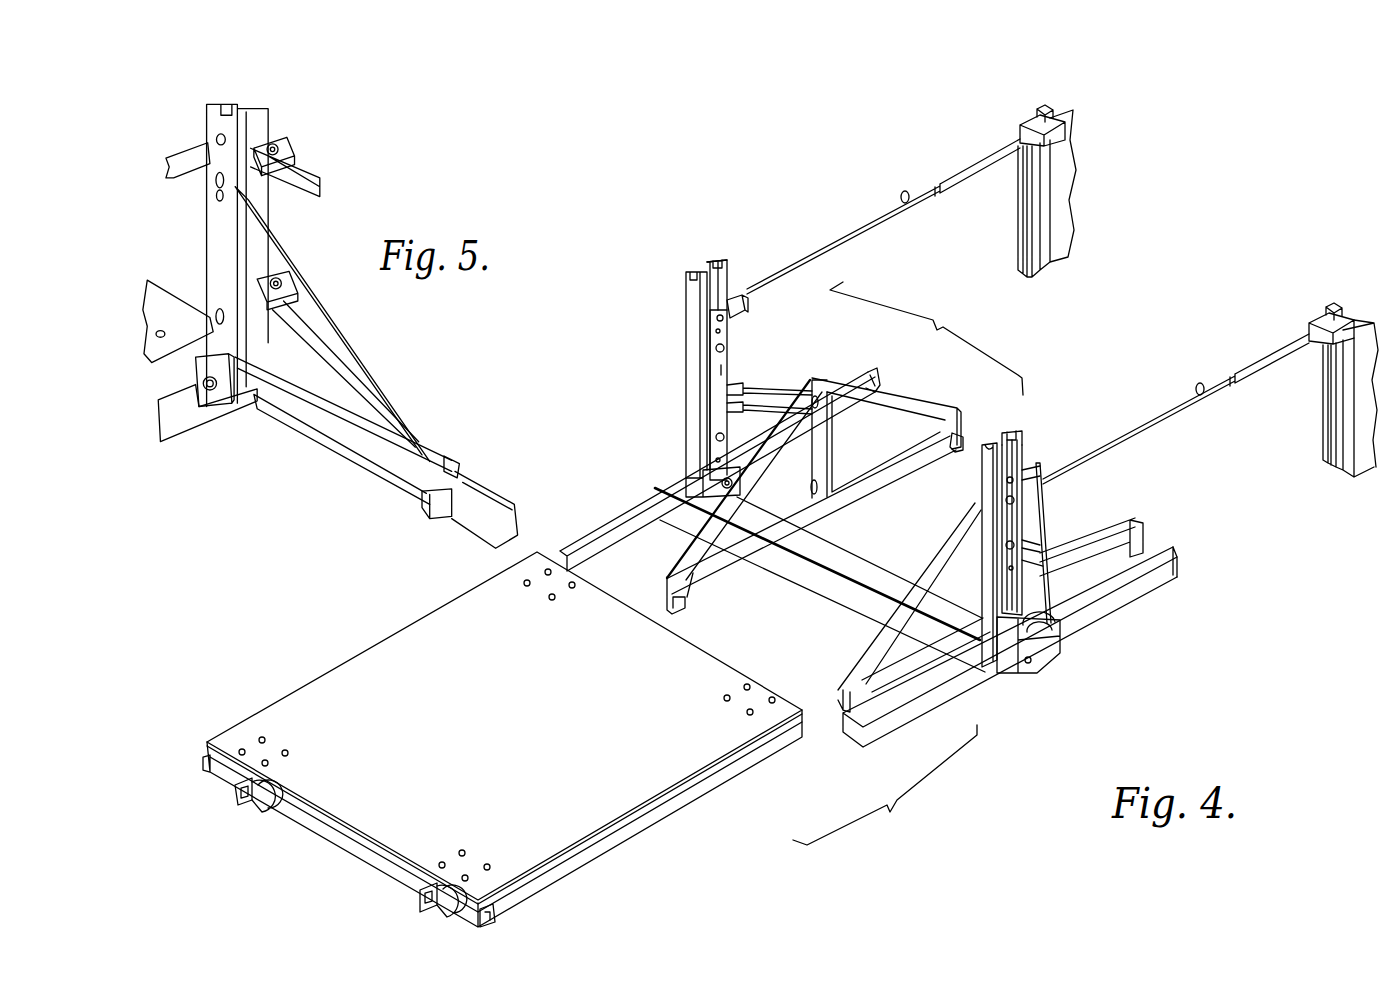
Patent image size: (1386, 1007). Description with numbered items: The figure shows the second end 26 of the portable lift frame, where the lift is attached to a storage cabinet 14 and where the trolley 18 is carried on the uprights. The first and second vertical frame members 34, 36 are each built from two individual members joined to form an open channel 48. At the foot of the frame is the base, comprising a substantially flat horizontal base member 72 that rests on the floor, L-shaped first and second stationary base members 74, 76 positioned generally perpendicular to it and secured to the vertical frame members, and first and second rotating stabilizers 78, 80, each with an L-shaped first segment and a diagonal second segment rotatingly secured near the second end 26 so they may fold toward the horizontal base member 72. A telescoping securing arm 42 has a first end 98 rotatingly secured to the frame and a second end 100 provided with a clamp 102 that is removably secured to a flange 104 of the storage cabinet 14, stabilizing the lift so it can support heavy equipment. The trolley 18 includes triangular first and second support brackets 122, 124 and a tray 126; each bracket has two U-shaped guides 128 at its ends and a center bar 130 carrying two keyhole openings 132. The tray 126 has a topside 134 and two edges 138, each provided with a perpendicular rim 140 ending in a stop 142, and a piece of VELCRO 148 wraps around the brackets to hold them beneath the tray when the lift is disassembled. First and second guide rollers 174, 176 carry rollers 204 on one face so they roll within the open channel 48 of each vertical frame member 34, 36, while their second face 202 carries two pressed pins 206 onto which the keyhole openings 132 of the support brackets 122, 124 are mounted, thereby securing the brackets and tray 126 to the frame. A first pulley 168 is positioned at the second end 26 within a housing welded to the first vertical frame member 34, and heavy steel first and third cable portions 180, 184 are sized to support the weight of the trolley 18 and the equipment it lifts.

In FIG. 4, the storage cabinet 14 is at (1060, 215).
In FIG. 4, the trolley 18 is at (884, 563).
In FIG. 4, the second end 26 is at (781, 456).
In FIG. 4, the first vertical frame member 34 is at (916, 447).
In FIG. 4, the second vertical frame member 36 is at (687, 298).
In FIG. 4, the securing arm 42 is at (883, 222).
In FIG. 4, the open channel 48 is at (1018, 432).
In FIG. 5, the horizontal base member 72 is at (180, 392).
In FIG. 4, the horizontal base member 72 is at (830, 548).
In FIG. 4, the first stationary base member 74 is at (947, 688).
In FIG. 4, the second stationary base member 76 is at (652, 505).
In FIG. 4, the first rotating stabilizer 78 is at (1147, 572).
In FIG. 5, the second rotating stabilizer 80 is at (460, 467).
In FIG. 4, the second rotating stabilizer 80 is at (870, 377).
In FIG. 4, the first end 98 is at (747, 295).
In FIG. 4, the second end 100 is at (1050, 294).
In FIG. 4, the clamp 102 is at (1057, 147).
In FIG. 4, the flange 104 is at (1052, 128).
In FIG. 4, the first support bracket 122 is at (1140, 535).
In FIG. 5, the second support bracket 124 is at (417, 427).
In FIG. 4, the second support bracket 124 is at (814, 463).
In FIG. 5, the tray 126 is at (162, 277).
In FIG. 4, the tray 126 is at (483, 739).
In FIG. 5, the U-shaped guide 128 is at (400, 512).
In FIG. 4, the U-shaped guide 128 is at (683, 602).
In FIG. 4, the center bar 130 is at (822, 426).
In FIG. 4, the keyhole opening 132 is at (817, 394).
In FIG. 4, the topside 134 is at (660, 778).
In FIG. 4, the edge 138 is at (408, 621).
In FIG. 5, the rim 140 is at (172, 377).
In FIG. 4, the rim 140 is at (253, 717).
In FIG. 4, the stop 142 is at (495, 916).
In FIG. 4, the piece of VELCRO 148 is at (267, 808).
In FIG. 4, the first pulley 168 is at (1050, 634).
In FIG. 4, the first guide roller 174 is at (1007, 548).
In FIG. 5, the second guide roller 176 is at (222, 130).
In FIG. 4, the second guide roller 176 is at (720, 374).
In FIG. 4, the first cable portion 180 is at (1046, 466).
In FIG. 4, the third cable portion 184 is at (718, 262).
In FIG. 4, the second face 202 is at (717, 398).
In FIG. 4, the roller 204 is at (1028, 463).
In FIG. 4, the pressed pin 206 is at (723, 347).